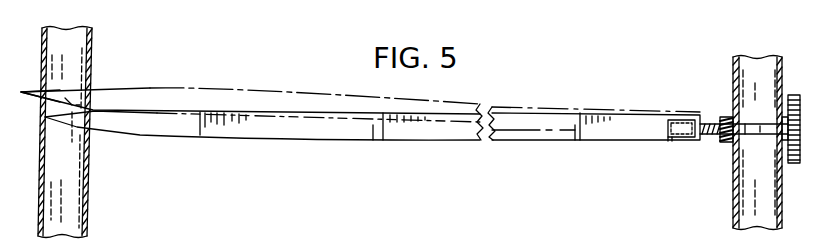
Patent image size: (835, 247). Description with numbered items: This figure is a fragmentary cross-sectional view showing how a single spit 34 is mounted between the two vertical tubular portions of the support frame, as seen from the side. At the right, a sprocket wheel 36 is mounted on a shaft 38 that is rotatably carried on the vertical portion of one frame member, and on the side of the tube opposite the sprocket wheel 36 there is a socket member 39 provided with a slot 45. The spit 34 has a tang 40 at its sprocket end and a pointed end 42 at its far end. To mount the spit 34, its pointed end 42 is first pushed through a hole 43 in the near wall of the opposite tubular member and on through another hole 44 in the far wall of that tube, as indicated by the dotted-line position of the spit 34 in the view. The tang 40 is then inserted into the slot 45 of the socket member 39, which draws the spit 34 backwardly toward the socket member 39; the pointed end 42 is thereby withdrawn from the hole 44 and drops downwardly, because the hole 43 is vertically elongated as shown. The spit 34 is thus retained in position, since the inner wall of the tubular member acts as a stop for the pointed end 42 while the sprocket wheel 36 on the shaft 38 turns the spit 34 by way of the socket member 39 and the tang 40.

The spit 34 is at (375, 125).
The sprocket wheel 36 is at (797, 164).
The shaft 38 is at (760, 136).
The socket member 39 is at (724, 143).
The tang 40 is at (672, 141).
The pointed end 42 is at (60, 122).
The hole 43 is at (88, 90).
The hole 44 is at (42, 87).
The slot 45 is at (692, 115).